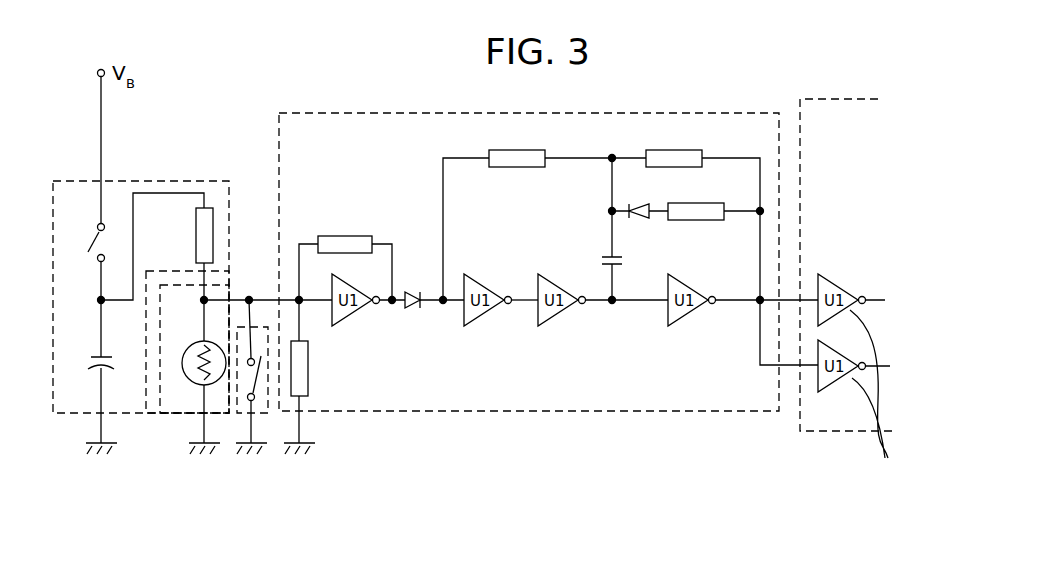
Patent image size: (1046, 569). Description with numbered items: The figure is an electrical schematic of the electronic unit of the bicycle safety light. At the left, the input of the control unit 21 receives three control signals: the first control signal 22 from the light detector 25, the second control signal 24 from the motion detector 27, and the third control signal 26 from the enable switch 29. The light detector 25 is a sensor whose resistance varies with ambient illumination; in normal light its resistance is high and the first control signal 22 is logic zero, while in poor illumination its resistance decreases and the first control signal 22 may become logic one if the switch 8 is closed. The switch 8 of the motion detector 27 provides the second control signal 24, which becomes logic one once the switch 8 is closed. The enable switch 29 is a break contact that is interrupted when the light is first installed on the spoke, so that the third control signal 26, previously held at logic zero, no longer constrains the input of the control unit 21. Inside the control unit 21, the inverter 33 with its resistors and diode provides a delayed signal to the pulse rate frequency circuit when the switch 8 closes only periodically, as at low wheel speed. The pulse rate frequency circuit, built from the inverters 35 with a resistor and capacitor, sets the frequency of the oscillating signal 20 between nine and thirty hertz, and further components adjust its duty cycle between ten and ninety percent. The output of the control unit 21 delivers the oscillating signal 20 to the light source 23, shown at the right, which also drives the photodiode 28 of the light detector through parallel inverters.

The switch 8 is at (83, 243).
The oscillating signal 20 is at (736, 300).
The control unit 21 is at (337, 113).
The first control signal 22 is at (196, 322).
The light source 23 is at (841, 258).
The second control signal 24 is at (101, 300).
The light detector 25 is at (190, 382).
The third control signal 26 is at (252, 318).
The motion detector 27 is at (137, 300).
The photodiode 28 is at (880, 184).
The enable switch 29 is at (270, 398).
The inverter 33 is at (357, 313).
The inverters 35 is at (567, 313).